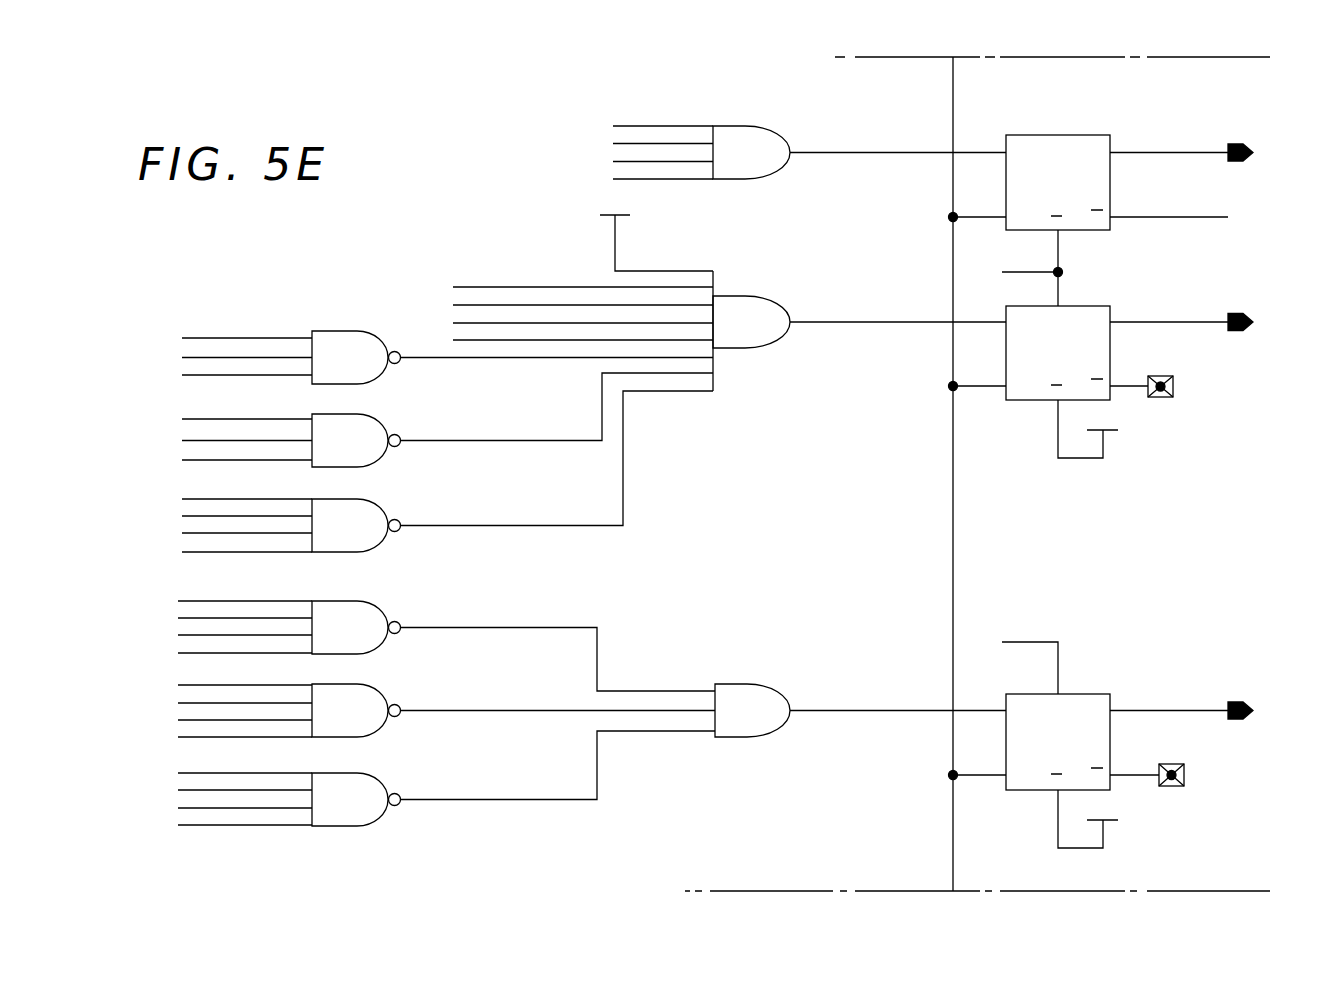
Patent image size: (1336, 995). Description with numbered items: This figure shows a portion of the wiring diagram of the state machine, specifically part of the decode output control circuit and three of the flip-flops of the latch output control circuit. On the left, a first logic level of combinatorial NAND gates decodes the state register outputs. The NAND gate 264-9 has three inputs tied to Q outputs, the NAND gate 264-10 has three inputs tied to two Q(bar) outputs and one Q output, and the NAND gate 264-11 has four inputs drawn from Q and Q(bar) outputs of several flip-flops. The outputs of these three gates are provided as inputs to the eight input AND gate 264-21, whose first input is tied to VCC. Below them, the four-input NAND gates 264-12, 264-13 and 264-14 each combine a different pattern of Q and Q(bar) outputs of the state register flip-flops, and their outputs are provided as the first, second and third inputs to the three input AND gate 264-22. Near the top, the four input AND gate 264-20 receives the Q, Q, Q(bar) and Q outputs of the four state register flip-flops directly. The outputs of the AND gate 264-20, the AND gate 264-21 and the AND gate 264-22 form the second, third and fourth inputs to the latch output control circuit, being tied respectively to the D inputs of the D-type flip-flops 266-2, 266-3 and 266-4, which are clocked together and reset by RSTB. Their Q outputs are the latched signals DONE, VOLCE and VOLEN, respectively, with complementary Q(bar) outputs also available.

The NAND gate 264-9 is at (363, 330).
The NAND gate 264-10 is at (376, 414).
The NAND gate 264-11 is at (372, 499).
The NAND gate 264-12 is at (360, 601).
The NAND gate 264-13 is at (358, 685).
The NAND gate 264-14 is at (358, 773).
The four input AND gate 264-20 is at (748, 125).
The eight input AND gate 264-21 is at (755, 295).
The three input AND gate 264-22 is at (747, 683).
The second D-type flip-flop 266-2 is at (1057, 135).
The third D-type flip-flop 266-3 is at (1080, 305).
The fourth D-type flip-flop 266-4 is at (1077, 693).